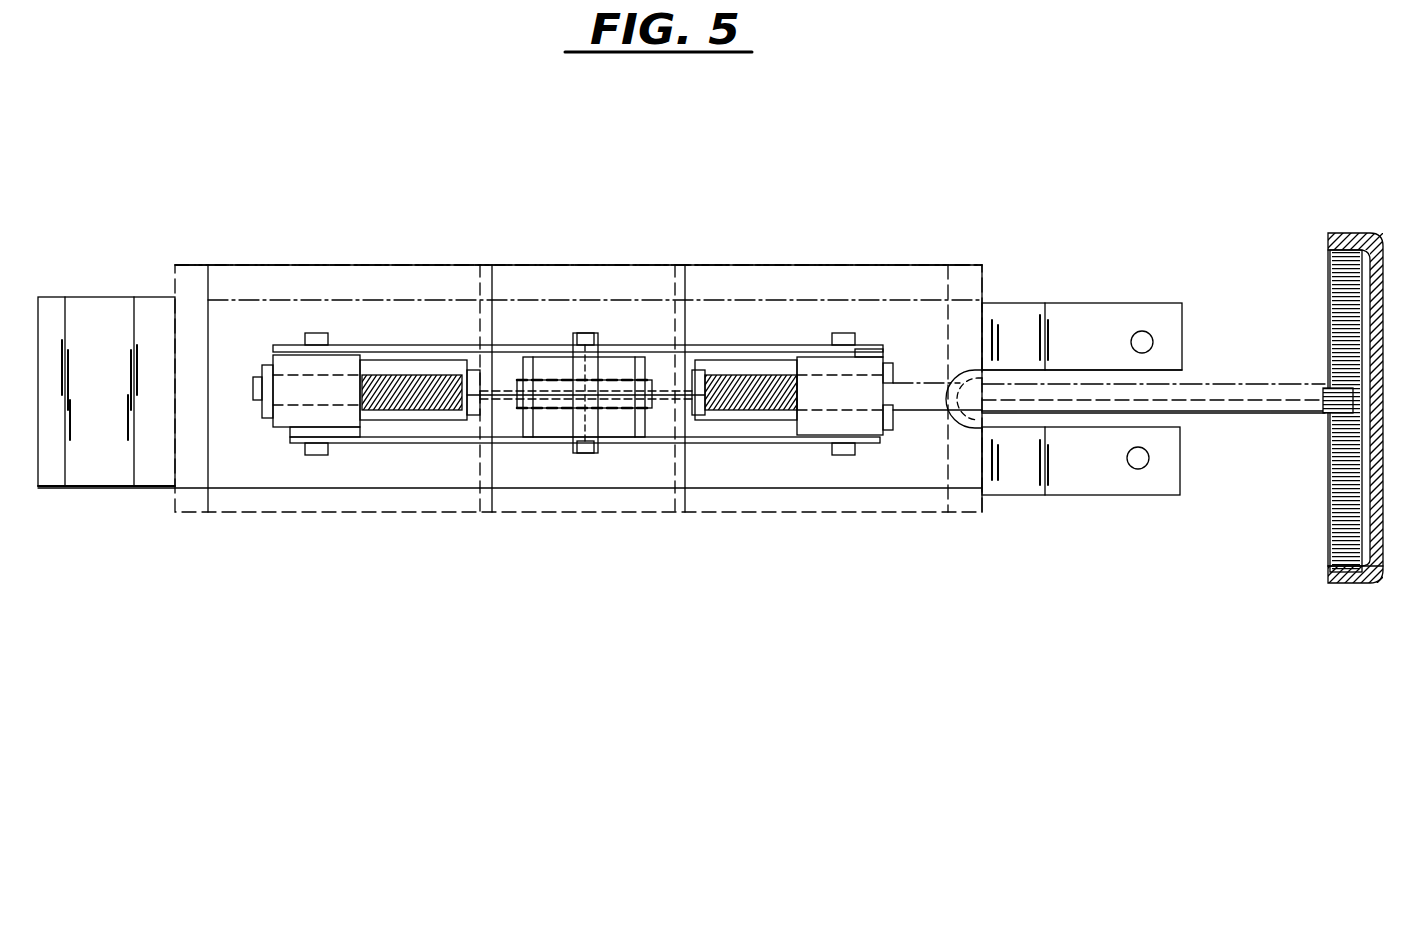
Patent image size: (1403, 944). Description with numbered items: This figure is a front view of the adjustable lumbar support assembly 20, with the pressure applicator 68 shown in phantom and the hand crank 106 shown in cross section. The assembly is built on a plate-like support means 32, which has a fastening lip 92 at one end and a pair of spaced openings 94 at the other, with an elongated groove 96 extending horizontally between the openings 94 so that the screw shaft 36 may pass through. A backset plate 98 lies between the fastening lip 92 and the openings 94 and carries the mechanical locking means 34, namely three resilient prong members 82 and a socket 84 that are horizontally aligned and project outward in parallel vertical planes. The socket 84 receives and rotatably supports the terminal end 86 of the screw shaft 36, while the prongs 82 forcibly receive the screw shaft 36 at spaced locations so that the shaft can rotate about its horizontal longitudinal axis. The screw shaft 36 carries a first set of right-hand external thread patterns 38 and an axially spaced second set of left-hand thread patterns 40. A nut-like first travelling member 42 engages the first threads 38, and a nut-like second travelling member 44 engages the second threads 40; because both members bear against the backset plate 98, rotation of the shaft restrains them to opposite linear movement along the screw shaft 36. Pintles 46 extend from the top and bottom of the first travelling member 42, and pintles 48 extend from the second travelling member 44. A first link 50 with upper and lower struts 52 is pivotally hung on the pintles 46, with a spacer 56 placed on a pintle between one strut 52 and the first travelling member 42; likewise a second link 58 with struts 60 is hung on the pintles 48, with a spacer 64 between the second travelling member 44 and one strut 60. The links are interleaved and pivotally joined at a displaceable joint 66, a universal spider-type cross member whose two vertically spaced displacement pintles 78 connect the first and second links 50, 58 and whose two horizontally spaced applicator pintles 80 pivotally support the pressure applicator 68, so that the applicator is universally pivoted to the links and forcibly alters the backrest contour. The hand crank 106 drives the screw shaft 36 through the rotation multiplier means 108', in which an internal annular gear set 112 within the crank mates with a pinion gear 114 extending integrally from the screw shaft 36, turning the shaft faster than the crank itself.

The adjustable lumbar support assembly 20 is at (1064, 210).
The support means 32 is at (116, 293).
The mechanical locking means 34 is at (905, 355).
The screw shaft 36 is at (1238, 385).
The first set of external thread patterns 38 is at (778, 412).
The second set of external thread patterns 40 is at (425, 400).
The first travelling member 42 is at (878, 436).
The second travelling member 44 is at (300, 355).
The pintles 46 is at (845, 333).
The pintles 48 is at (328, 338).
The first link 50 is at (755, 345).
The struts 52 is at (790, 355).
The spacer 56 is at (870, 353).
The second link 58 is at (525, 355).
The struts 60 is at (445, 347).
The spacer 64 is at (290, 428).
The displaceable joint 66 is at (608, 410).
The pressure applicator 68 is at (360, 265).
The displacement pintles 78 is at (590, 333).
The applicator pintles 80 is at (665, 380).
The resilient prong members 82 is at (497, 360).
The socket 84 is at (262, 365).
The terminal end 86 is at (253, 388).
The fastening lip 92 is at (55, 486).
The openings 94 is at (1146, 332).
The groove 96 is at (1062, 372).
The backset plate 98 is at (400, 488).
The hand crank 106 is at (1370, 235).
The rotation multiplier means 108' is at (1311, 582).
The internal annular gear set 112 is at (1345, 480).
The pinion gear 114 is at (1340, 412).